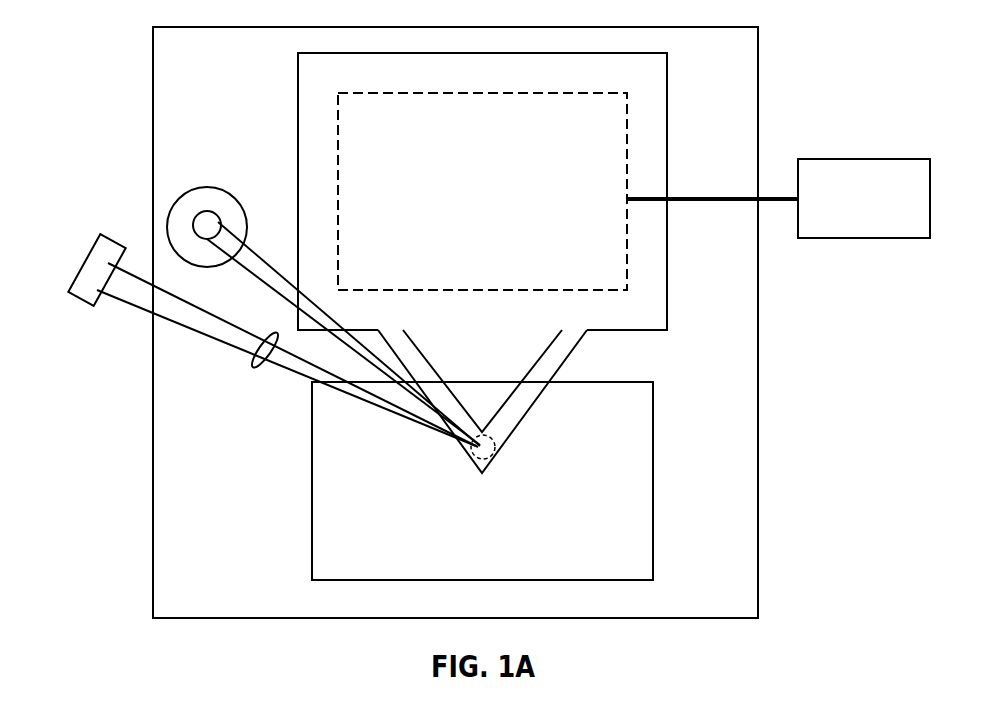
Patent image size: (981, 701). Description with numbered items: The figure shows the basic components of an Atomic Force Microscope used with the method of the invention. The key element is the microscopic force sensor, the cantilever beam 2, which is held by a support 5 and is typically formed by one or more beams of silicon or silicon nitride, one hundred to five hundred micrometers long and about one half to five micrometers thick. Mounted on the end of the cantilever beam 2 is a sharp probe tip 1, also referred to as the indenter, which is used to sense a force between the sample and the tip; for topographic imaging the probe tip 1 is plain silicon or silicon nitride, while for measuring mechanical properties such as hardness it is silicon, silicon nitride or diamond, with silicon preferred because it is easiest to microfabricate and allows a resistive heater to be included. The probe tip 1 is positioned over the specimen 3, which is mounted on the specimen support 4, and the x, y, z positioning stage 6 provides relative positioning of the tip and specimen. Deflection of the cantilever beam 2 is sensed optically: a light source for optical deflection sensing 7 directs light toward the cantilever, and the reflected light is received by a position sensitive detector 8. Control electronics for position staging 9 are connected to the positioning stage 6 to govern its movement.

The probe tip 1 is at (478, 461).
The cantilever beam 2 is at (562, 356).
The specimen 3 is at (653, 473).
The specimen support 4 is at (758, 317).
The support 5 is at (667, 159).
The x, y, z positioning stage 6 is at (627, 120).
The light source for optical deflection sensing 7 is at (75, 277).
The position sensitive detector 8 is at (167, 212).
The control electronics for position staging 9 is at (778, 198).